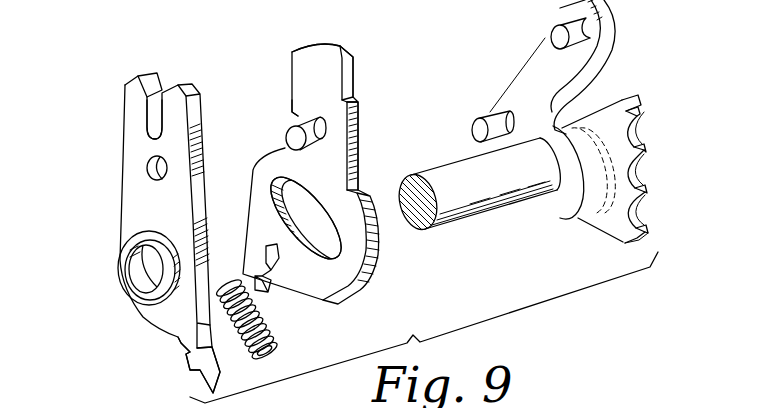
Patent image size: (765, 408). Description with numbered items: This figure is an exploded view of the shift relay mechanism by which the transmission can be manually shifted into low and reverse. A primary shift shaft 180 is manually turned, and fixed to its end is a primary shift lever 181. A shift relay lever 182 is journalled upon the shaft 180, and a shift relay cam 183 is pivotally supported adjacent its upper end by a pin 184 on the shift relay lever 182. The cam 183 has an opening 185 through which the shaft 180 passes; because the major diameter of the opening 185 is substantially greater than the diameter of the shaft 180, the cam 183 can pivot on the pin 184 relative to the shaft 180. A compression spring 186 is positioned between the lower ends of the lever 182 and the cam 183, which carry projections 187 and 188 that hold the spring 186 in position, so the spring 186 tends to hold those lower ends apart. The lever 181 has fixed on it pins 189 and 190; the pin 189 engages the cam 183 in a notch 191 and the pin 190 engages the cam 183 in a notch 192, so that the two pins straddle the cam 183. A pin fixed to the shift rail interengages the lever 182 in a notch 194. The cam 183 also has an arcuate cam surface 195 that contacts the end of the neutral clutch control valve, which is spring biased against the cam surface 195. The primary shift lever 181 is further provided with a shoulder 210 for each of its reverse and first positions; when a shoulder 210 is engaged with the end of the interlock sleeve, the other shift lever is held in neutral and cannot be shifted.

The primary shift shaft 180 is at (438, 176).
The primary shift lever 181 is at (588, 80).
The shift relay lever 182 is at (121, 207).
The shift relay cam 183 is at (357, 118).
The pin 184 is at (291, 140).
The opening 185 is at (271, 215).
The compression spring 186 is at (276, 340).
The projection 187 is at (278, 287).
The projection 188 is at (188, 364).
The pin 189 is at (553, 34).
The pin 190 is at (477, 120).
The notch 191 is at (352, 80).
The notch 192 is at (293, 116).
The notch 194 is at (152, 115).
The arcuate cam surface 195 is at (367, 272).
The shoulder 210 is at (640, 110).